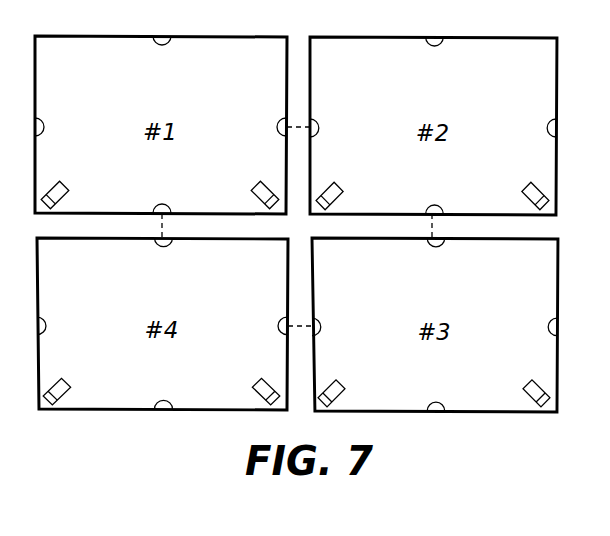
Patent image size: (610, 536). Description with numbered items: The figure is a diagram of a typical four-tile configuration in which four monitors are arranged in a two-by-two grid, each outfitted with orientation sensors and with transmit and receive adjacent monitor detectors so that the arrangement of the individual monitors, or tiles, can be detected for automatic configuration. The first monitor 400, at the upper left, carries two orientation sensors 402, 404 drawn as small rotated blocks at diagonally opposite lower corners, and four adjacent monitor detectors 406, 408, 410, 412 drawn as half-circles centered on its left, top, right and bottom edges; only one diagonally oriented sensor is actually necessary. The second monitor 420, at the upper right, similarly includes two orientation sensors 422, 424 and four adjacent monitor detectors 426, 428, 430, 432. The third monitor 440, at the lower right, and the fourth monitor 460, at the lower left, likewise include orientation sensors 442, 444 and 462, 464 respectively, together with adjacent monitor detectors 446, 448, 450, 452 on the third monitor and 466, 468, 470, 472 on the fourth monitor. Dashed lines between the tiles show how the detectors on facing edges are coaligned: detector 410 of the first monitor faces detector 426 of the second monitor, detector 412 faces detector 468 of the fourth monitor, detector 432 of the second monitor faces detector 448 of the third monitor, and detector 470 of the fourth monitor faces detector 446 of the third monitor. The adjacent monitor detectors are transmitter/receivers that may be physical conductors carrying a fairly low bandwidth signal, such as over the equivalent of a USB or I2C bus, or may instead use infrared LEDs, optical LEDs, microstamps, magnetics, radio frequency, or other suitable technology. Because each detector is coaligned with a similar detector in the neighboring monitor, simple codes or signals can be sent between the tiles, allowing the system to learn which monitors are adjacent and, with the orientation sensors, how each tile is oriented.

The first monitor 400 is at (92, 71).
The orientation sensor 402 is at (63, 185).
The orientation sensor 404 is at (258, 184).
The adjacent monitor detector 406 is at (42, 122).
The adjacent monitor detector 408 is at (164, 45).
The adjacent monitor detector 410 is at (278, 122).
The adjacent monitor detector 412 is at (167, 205).
The second monitor 420 is at (433, 126).
The orientation sensor 422 is at (360, 187).
The orientation sensor 424 is at (509, 182).
The adjacent monitor detector 426 is at (347, 118).
The adjacent monitor detector 428 is at (462, 59).
The adjacent monitor detector 430 is at (519, 119).
The adjacent monitor detector 432 is at (462, 195).
The third monitor 440 is at (435, 325).
The orientation sensor 442 is at (362, 385).
The orientation sensor 444 is at (510, 379).
The adjacent monitor detector 446 is at (348, 317).
The adjacent monitor detector 448 is at (463, 259).
The adjacent monitor detector 450 is at (521, 318).
The adjacent monitor detector 452 is at (463, 392).
The fourth monitor 460 is at (162, 324).
The orientation sensor 462 is at (88, 383).
The orientation sensor 464 is at (238, 378).
The adjacent monitor detector 466 is at (74, 317).
The adjacent monitor detector 468 is at (192, 259).
The adjacent monitor detector 470 is at (250, 316).
The adjacent monitor detector 472 is at (192, 391).